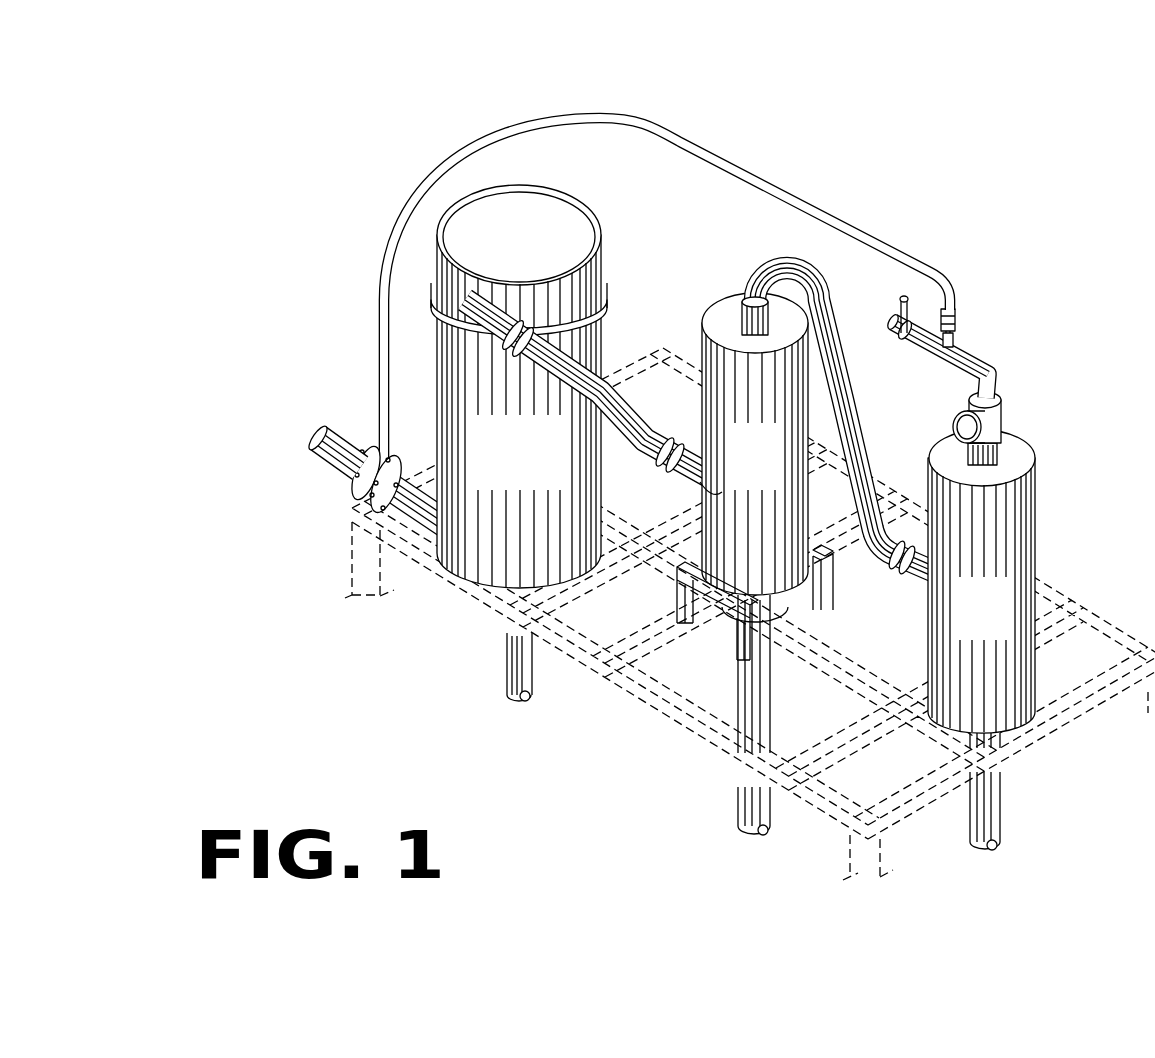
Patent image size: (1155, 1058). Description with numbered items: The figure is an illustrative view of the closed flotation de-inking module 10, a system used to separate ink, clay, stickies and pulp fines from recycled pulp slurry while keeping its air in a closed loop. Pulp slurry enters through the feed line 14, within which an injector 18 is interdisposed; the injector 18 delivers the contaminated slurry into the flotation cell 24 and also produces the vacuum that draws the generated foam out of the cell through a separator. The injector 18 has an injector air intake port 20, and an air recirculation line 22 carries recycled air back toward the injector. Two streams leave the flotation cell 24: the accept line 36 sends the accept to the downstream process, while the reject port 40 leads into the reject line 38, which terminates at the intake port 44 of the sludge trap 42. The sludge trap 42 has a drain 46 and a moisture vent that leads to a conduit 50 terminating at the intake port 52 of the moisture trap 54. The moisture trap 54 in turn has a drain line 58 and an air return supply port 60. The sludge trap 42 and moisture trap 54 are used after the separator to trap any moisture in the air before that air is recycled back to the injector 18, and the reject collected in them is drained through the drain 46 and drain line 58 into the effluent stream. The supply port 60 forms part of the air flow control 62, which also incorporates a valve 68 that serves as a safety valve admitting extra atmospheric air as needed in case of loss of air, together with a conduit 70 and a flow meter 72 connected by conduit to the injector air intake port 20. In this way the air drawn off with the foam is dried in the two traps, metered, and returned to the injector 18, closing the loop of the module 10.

The closed flotation de-inking module for recycled paper 10 is at (847, 177).
The feed line 14 is at (322, 444).
The injector 18 is at (362, 484).
The injector air intake port 20 is at (379, 432).
The air recirculation line 22 is at (428, 198).
The flotation cell 24 is at (528, 463).
The accept line 36 is at (507, 665).
The reject line 38 is at (637, 400).
The reject port 40 is at (462, 293).
The sludge trap 42 is at (783, 481).
The intake port 44 is at (705, 497).
The drain 46 is at (767, 722).
The conduit 50 is at (790, 267).
The intake port 52 is at (922, 593).
The moisture trap 54 is at (962, 629).
The drain line 58 is at (990, 812).
The supply port 60 is at (1003, 452).
The air flow control 62 is at (1003, 403).
The valve 68 is at (893, 326).
The conduit 70 is at (968, 360).
The flow meter 72 is at (957, 313).